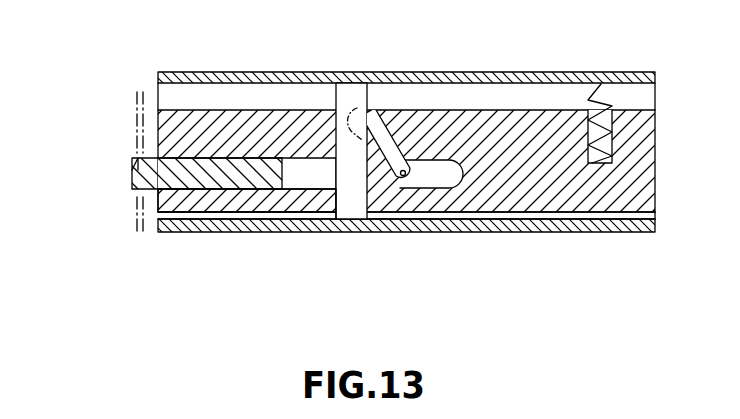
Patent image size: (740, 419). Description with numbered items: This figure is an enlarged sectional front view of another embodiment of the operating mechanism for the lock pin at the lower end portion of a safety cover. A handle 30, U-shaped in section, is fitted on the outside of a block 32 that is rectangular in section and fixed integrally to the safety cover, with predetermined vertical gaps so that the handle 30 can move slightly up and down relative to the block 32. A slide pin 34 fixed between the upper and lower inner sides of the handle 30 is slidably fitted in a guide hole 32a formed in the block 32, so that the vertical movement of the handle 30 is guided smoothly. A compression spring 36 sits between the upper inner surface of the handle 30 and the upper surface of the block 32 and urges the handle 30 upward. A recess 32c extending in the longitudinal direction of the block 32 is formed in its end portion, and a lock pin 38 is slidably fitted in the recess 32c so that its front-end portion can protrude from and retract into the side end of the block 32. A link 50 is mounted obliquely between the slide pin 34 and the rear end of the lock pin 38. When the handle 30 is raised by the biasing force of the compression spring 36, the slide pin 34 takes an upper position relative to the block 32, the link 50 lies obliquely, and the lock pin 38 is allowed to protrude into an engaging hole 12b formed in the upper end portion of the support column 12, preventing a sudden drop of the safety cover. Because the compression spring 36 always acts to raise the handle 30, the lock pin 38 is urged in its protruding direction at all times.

The support column 12 is at (135, 125).
The engaging hole 12b is at (130, 173).
The handle 30 is at (450, 72).
The block 32 is at (570, 192).
The guide hole 32a is at (341, 207).
The recess 32c is at (233, 190).
The slide pin 34 is at (361, 210).
The compression spring 36 is at (612, 103).
The lock pin 38 is at (195, 172).
The link 50 is at (382, 110).